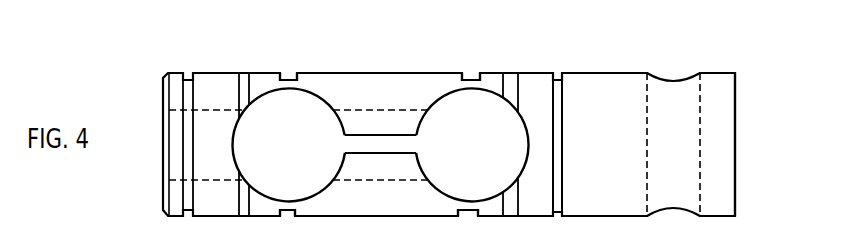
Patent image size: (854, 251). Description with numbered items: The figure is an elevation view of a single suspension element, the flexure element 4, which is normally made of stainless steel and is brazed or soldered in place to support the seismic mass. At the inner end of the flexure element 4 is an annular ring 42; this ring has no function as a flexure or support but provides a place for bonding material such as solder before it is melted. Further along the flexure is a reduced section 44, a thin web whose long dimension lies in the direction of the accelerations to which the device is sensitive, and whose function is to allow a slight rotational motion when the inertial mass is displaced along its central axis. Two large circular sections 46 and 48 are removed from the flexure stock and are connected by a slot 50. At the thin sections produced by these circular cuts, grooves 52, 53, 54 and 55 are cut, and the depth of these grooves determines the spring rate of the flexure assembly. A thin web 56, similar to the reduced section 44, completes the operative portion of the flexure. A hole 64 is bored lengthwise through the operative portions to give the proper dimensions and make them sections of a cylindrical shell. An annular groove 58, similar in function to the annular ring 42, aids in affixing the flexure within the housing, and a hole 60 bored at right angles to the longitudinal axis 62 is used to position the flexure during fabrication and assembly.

The flexure element 4 is at (383, 64).
The annular ring 42 is at (188, 72).
The reduced section 44 is at (247, 80).
The circular section 46 is at (318, 193).
The circular section 48 is at (445, 195).
The slot 50 is at (403, 145).
The groove 52 is at (287, 72).
The groove 53 is at (286, 217).
The groove 54 is at (470, 75).
The groove 55 is at (467, 217).
The thin web 56 is at (510, 80).
The annular groove 58 is at (557, 217).
The hole 60 is at (649, 97).
The longitudinal axis 62 is at (717, 147).
The hole 64 is at (177, 181).